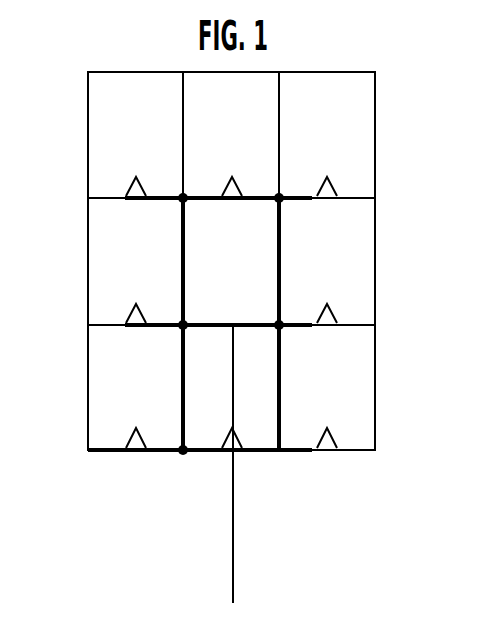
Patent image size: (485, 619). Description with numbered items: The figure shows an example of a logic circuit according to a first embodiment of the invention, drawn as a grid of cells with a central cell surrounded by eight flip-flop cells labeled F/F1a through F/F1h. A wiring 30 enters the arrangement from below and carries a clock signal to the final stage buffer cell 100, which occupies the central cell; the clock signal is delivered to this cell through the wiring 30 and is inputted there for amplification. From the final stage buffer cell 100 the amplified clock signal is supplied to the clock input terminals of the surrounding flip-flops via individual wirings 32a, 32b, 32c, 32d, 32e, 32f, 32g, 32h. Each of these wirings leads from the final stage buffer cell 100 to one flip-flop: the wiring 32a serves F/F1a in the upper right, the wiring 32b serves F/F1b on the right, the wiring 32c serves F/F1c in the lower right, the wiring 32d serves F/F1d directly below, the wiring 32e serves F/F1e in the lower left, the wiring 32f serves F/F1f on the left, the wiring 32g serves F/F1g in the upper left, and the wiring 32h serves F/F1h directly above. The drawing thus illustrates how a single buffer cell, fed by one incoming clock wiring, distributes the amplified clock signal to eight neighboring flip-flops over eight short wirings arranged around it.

The wiring 32a is at (308, 202).
The wiring 32b is at (308, 330).
The wiring 32c is at (308, 452).
The wiring 32d is at (207, 452).
The wiring 32e is at (157, 452).
The wiring 32f is at (152, 327).
The wiring 32g is at (152, 199).
The wiring 32h is at (257, 198).
The final stage buffer cell 100 is at (262, 298).
The wiring 30 is at (234, 585).